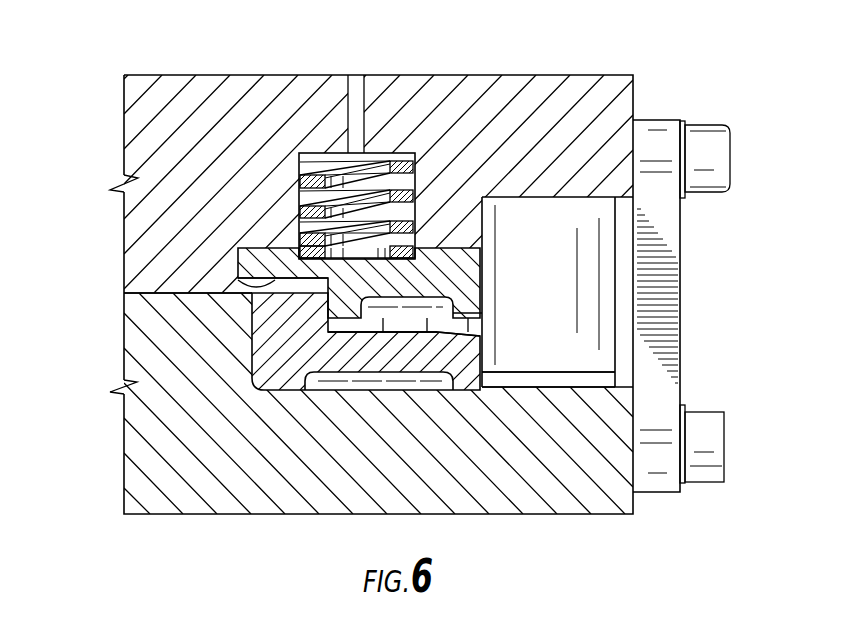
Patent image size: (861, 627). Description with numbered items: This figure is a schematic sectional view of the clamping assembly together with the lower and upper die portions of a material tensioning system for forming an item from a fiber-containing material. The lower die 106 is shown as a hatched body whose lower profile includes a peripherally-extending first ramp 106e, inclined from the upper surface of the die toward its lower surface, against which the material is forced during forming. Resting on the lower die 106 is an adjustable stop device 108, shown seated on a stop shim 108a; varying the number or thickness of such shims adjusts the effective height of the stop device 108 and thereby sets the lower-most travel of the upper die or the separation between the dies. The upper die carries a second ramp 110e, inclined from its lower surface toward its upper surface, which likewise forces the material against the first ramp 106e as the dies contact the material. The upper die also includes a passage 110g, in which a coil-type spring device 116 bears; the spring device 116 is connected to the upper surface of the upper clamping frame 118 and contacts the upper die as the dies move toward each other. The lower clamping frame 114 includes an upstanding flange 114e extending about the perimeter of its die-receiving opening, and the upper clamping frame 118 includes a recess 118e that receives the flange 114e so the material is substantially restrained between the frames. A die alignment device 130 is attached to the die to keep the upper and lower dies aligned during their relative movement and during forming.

The lower die 106 is at (548, 87).
The first ramp 106e is at (210, 293).
The adjustable stop device 108 is at (603, 297).
The stop shim 108a is at (603, 380).
The second ramp 110e is at (237, 280).
The passage 110g is at (295, 170).
The lower clamping frame 114 is at (282, 375).
The upstanding flange 114e is at (270, 320).
The spring device 116 is at (390, 154).
The upper clamping frame 118 is at (453, 247).
The recess 118e is at (237, 278).
The die alignment device 130 is at (693, 238).